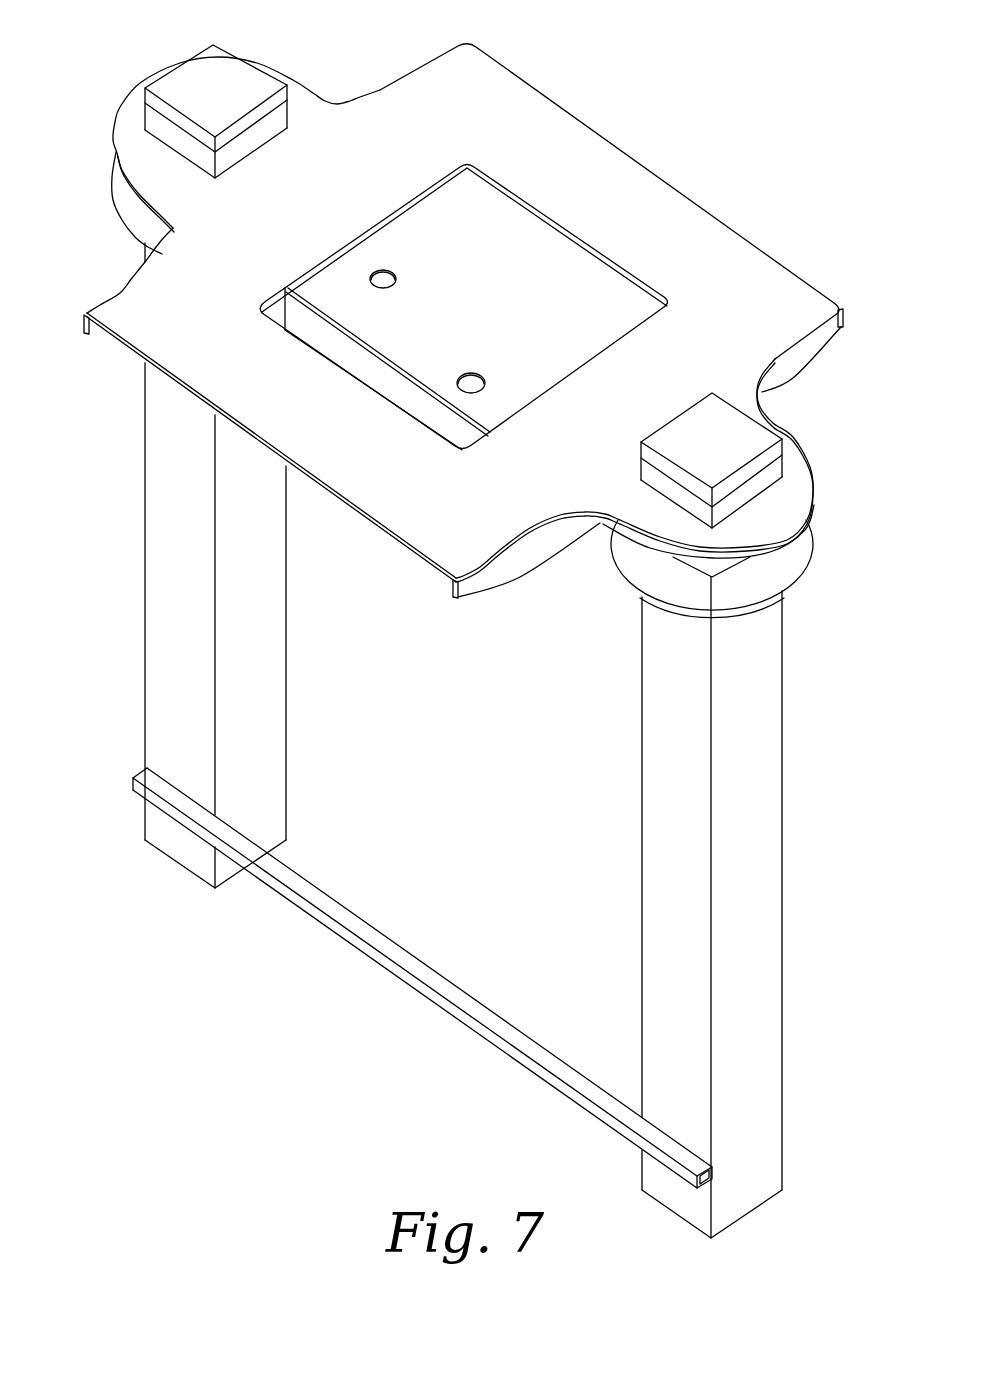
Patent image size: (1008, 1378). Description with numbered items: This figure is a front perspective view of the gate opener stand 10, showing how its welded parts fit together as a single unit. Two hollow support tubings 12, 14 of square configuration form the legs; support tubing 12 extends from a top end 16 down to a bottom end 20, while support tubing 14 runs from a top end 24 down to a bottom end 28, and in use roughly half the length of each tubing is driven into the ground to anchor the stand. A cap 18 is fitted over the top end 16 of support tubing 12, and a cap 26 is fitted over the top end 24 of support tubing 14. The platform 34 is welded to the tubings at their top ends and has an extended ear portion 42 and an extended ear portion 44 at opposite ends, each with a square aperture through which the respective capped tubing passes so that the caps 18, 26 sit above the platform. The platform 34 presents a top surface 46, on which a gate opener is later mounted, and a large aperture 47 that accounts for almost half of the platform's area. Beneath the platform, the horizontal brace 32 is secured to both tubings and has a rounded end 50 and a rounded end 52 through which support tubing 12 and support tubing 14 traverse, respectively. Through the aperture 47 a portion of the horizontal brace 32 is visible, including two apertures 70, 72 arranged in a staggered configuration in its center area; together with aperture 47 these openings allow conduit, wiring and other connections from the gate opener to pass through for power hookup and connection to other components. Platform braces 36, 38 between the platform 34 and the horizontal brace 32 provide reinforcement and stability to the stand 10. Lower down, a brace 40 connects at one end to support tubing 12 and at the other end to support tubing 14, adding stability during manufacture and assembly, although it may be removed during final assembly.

The gate opener stand 10 is at (712, 76).
The support tubing 12 is at (168, 558).
The support tubing 14 is at (731, 858).
The top end 16 is at (262, 135).
The cap 18 is at (201, 105).
The bottom end 20 is at (140, 818).
The top end 24 is at (650, 470).
The cap 26 is at (698, 450).
The bottom end 28 is at (785, 1142).
The horizontal brace 32 is at (418, 335).
The platform 34 is at (726, 212).
The platform brace 36 is at (90, 336).
The platform brace 38 is at (540, 555).
The brace 40 is at (372, 922).
The extended ear portion 42 is at (127, 92).
The extended ear portion 44 is at (816, 462).
The top surface 46 is at (710, 300).
The aperture 47 is at (503, 220).
The rounded end 50 is at (115, 180).
The rounded end 52 is at (806, 582).
The aperture 70 is at (485, 386).
The aperture 72 is at (373, 282).